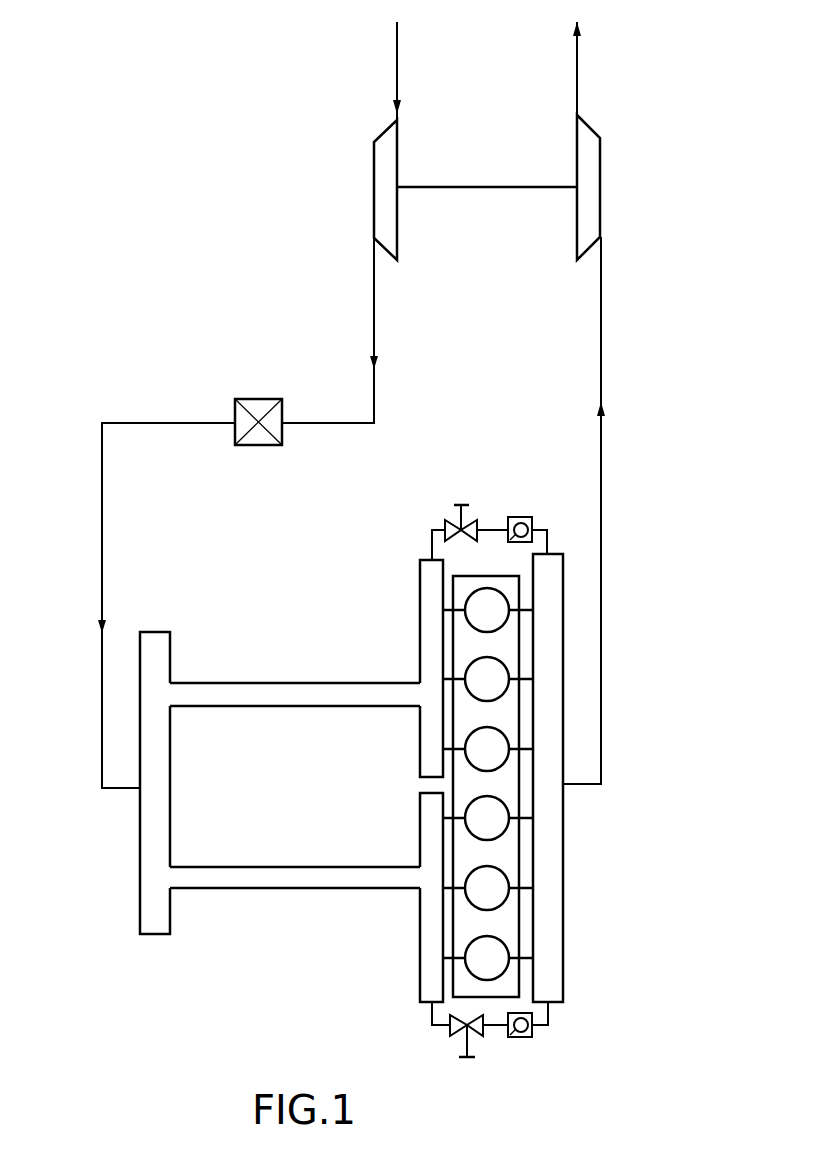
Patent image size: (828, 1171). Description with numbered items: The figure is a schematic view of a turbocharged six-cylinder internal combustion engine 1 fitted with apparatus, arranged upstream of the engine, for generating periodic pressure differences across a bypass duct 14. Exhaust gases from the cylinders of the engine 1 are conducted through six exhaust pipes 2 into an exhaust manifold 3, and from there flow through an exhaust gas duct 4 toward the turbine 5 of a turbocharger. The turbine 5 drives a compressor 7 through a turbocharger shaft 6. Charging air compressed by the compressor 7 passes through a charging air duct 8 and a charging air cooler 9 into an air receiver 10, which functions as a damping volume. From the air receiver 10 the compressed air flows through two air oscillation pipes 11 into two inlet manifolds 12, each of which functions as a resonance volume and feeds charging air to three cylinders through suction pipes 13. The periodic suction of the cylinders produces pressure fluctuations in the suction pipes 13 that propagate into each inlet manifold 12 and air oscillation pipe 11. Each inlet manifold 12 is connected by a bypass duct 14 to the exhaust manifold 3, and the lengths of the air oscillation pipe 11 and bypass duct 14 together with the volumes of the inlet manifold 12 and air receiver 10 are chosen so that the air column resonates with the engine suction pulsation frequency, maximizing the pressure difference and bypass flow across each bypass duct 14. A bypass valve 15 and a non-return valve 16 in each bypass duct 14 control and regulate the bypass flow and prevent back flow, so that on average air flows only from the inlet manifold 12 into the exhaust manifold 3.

The internal combustion engine 1 is at (474, 727).
The exhaust pipes 2 is at (522, 888).
The exhaust manifold 3 is at (556, 880).
The exhaust gas duct 4 is at (602, 715).
The turbine 5 is at (596, 178).
The turbocharger shaft 6 is at (477, 186).
The compressor 7 is at (392, 178).
The charging air duct 8 is at (373, 287).
The charging air cooler 9 is at (248, 398).
The air receiver 10 is at (168, 768).
The air oscillation pipes 11 is at (265, 705).
The inlet manifolds 12 is at (443, 669).
The suction pipes 13 is at (450, 608).
The bypass duct 14 is at (430, 548).
The bypass valve 15 is at (474, 528).
The non-return valve 16 is at (526, 522).